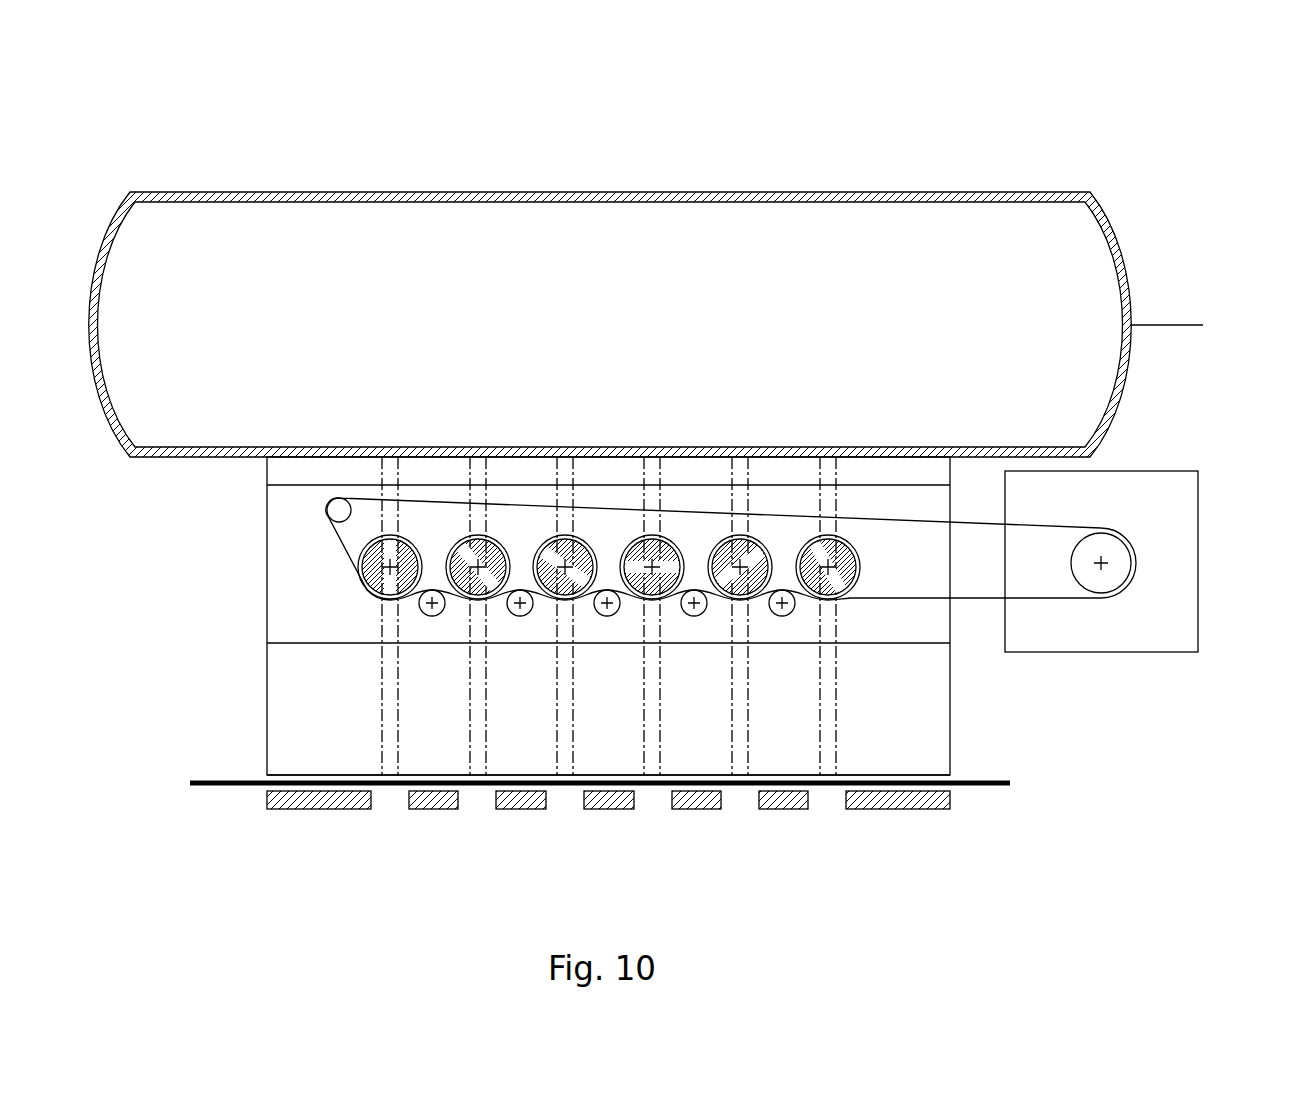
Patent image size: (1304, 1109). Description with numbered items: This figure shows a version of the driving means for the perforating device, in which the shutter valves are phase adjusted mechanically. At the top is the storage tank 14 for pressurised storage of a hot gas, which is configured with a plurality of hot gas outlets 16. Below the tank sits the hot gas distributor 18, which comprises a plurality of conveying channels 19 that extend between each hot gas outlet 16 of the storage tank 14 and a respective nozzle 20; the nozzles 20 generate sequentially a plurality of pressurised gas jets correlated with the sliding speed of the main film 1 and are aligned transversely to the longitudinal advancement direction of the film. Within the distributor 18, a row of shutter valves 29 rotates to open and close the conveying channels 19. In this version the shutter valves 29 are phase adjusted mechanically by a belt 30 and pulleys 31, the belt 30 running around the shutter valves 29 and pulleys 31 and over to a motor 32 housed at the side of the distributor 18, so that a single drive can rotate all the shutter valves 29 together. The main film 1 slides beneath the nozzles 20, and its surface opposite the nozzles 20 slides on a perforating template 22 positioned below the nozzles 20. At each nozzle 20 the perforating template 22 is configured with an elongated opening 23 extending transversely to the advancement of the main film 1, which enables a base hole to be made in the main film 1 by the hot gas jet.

The main film 1 is at (190, 783).
The storage tank 14 is at (153, 226).
The hot gas outlet 16 is at (382, 455).
The hot gas distributor 18 is at (205, 675).
The conveying channel 19 is at (390, 636).
The nozzle 20 is at (735, 775).
The perforating template 22 is at (277, 800).
The elongated opening 23 is at (477, 798).
The shutter valve 29 is at (360, 557).
The belt 30 is at (967, 603).
The pulley 31 is at (782, 613).
The motor 32 is at (1182, 480).